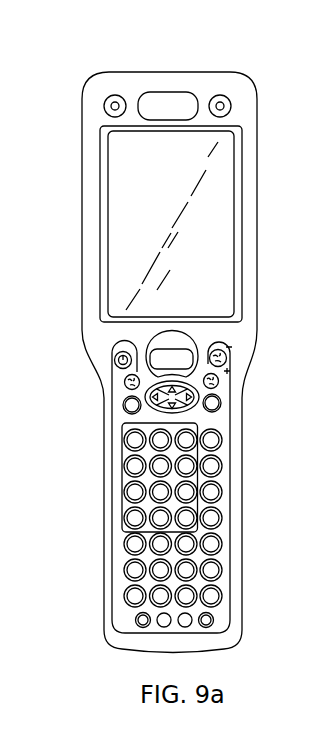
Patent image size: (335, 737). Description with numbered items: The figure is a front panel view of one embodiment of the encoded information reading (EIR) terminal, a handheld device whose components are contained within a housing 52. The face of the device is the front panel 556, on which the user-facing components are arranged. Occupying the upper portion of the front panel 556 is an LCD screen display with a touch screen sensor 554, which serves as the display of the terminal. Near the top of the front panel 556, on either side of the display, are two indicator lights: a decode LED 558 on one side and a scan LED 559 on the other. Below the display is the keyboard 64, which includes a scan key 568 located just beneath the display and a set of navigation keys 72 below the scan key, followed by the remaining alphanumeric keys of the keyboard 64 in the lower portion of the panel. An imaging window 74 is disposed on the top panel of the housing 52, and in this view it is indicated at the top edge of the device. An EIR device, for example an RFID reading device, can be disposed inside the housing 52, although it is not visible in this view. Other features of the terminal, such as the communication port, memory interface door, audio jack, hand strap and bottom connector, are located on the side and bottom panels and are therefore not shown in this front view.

The housing 52 is at (258, 229).
The imaging window 74 is at (166, 72).
The decode LED 558 is at (107, 99).
The scan LED 559 is at (229, 99).
The front panel 556 is at (92, 187).
The LCD screen display with a touch screen sensor 554 is at (128, 237).
The scan key 568 is at (150, 350).
The navigation keys 72 is at (147, 393).
The keyboard 64 is at (123, 482).